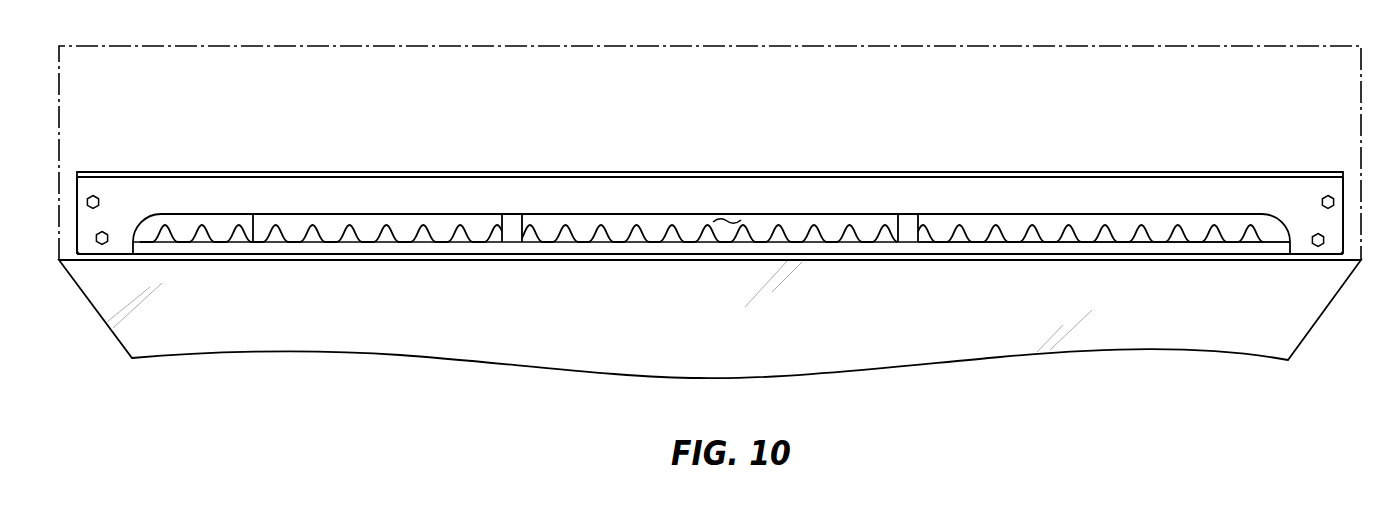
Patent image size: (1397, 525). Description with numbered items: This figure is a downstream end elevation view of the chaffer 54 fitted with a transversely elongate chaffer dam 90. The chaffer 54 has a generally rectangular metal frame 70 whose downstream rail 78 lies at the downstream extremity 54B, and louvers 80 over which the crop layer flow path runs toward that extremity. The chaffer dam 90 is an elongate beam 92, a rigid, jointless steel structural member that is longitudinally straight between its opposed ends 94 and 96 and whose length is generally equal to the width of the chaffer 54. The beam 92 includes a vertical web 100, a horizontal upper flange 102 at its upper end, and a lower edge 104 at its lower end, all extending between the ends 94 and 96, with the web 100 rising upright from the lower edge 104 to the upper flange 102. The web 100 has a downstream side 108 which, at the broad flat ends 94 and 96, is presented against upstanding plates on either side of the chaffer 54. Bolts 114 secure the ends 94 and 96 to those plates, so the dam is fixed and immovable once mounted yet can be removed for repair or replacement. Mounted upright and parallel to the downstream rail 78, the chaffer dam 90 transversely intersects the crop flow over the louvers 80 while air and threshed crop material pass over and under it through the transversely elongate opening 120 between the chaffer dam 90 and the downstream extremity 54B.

The chaffer 54 is at (1160, 266).
The downstream extremity 54B is at (663, 264).
The frame 70 is at (1215, 259).
The downstream rail 78 is at (985, 248).
The louvers 80 is at (1035, 233).
The chaffer dam 90 is at (798, 154).
The beam 92 is at (548, 206).
The end 94 is at (92, 222).
The end 96 is at (1327, 222).
The web 100 is at (362, 200).
The upper flange 102 is at (433, 171).
The lower edge 104 is at (253, 242).
The downstream side 108 is at (863, 193).
The bolts 114 is at (96, 195).
The opening 120 is at (727, 218).